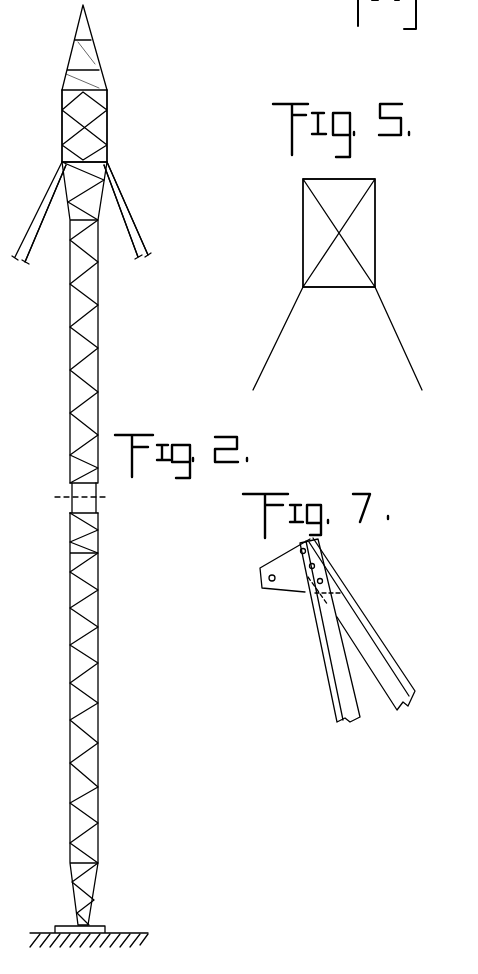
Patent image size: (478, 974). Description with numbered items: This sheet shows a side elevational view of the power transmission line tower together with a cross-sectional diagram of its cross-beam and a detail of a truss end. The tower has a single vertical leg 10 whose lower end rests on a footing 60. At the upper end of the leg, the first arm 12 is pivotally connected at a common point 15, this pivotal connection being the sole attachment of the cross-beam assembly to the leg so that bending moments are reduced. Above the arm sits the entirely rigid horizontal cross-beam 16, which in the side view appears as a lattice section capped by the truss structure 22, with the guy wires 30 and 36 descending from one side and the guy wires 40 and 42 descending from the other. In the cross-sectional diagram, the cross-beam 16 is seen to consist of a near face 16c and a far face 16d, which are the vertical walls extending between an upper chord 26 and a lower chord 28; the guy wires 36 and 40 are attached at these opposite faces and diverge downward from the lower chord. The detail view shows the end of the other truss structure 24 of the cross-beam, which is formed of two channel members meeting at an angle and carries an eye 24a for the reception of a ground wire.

In FIG. 2, the vertical leg 10 is at (98, 683).
In FIG. 2, the first arm 12 is at (98, 343).
In FIG. 2, the common point 15 is at (100, 497).
In FIG. 2, the horizontal cross-beam 16 is at (107, 119).
In FIG. 5, the horizontal cross-beam 16 is at (382, 240).
In FIG. 2, the near face 16c is at (62, 127).
In FIG. 5, the near face 16c is at (303, 226).
In FIG. 2, the far face 16d is at (107, 145).
In FIG. 5, the far face 16d is at (378, 265).
In FIG. 2, the truss structure 22 is at (98, 52).
In FIG. 7, the truss structure 24 is at (368, 619).
In FIG. 7, the eye 24a is at (271, 573).
In FIG. 5, the upper chord 26 is at (348, 179).
In FIG. 5, the lower chord 28 is at (330, 288).
In FIG. 2, the first wire 30 is at (35, 222).
In FIG. 2, the second wire 36 is at (38, 230).
In FIG. 5, the second wire 36 is at (282, 332).
In FIG. 2, the second wire 40 is at (132, 215).
In FIG. 5, the second wire 40 is at (396, 333).
In FIG. 2, the first wire 42 is at (130, 238).
In FIG. 2, the footing 60 is at (101, 930).